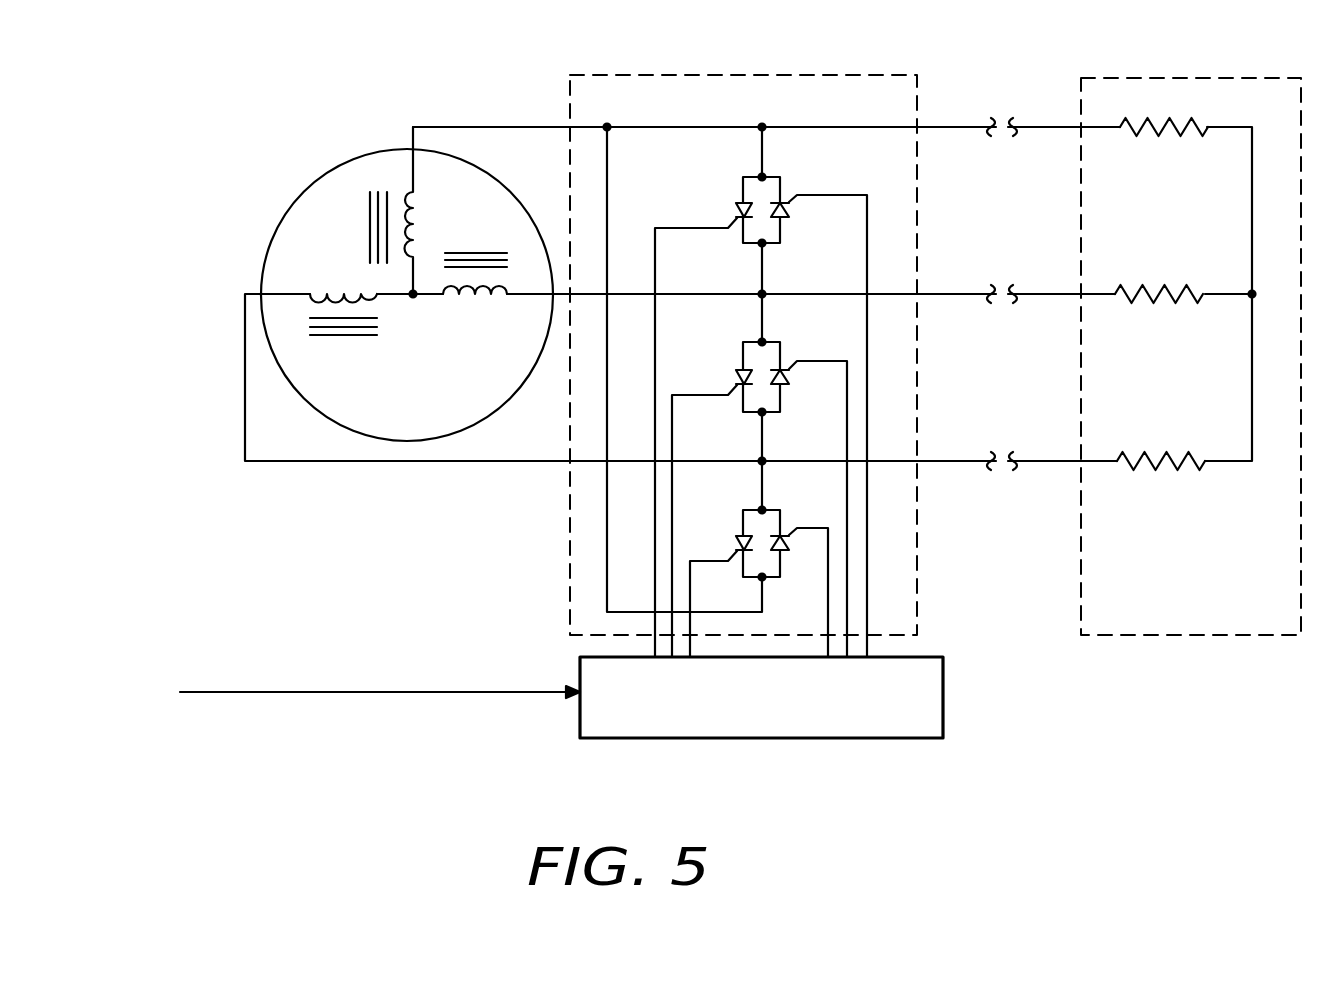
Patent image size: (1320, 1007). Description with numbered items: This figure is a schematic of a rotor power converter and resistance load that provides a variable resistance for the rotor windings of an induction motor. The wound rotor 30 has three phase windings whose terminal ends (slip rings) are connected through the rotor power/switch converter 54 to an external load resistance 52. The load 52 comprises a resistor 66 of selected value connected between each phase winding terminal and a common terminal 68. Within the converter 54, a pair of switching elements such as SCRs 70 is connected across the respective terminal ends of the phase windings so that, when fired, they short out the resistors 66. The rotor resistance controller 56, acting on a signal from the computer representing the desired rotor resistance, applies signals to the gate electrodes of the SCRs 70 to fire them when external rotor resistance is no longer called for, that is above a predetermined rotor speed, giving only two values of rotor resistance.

The rotor 30 is at (348, 165).
The external load resistance 52 is at (1196, 78).
The rotor power/switch converter 54 is at (730, 75).
The rotor power controller 56 is at (947, 686).
The resistor 66 is at (1165, 137).
The common terminal 68 is at (1255, 292).
The SCR 70 is at (740, 207).